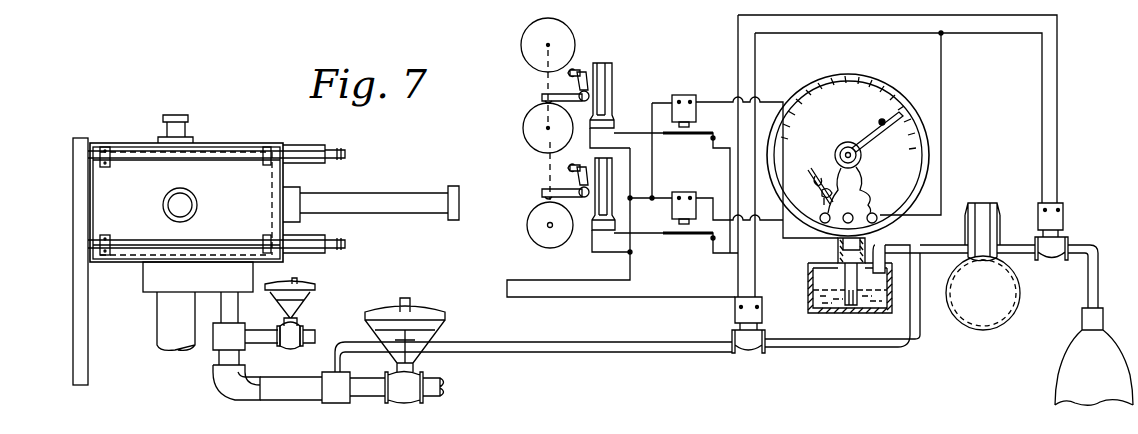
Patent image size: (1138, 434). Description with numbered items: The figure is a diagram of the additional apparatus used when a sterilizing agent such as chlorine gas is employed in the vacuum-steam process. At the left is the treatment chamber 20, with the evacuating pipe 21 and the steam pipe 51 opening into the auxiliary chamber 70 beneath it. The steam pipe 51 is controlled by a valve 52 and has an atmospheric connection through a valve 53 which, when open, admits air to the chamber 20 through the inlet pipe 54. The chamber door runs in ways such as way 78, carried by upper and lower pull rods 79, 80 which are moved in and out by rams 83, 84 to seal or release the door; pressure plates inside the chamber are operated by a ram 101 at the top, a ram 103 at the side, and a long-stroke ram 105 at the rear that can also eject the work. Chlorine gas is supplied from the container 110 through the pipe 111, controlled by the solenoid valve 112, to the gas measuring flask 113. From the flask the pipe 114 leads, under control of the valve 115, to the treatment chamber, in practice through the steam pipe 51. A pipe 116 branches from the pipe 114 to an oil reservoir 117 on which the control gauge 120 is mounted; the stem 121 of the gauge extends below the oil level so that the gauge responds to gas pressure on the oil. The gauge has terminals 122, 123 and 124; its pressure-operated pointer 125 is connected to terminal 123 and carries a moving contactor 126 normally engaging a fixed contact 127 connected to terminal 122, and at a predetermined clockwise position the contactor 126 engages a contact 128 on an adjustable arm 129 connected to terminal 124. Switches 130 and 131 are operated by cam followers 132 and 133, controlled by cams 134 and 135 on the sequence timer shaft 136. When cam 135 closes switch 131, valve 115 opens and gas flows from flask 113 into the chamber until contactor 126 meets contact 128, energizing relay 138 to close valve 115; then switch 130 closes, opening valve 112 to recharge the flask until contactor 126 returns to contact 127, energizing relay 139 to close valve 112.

The treatment chamber 20 is at (101, 201).
The evacuating pipe 21 is at (165, 327).
The steam pipe 51 is at (238, 312).
The valve 52 is at (408, 393).
The valve 53 is at (292, 330).
The inlet pipe 54 is at (318, 336).
The auxiliary chamber 70 is at (150, 282).
The way 78 is at (73, 255).
The upper pull rods 79 is at (248, 158).
The lower pull rods 80 is at (230, 244).
The ram 83 is at (312, 163).
The ram 84 is at (298, 238).
The ram 101 is at (180, 137).
The ram 103 is at (190, 206).
The ram 105 is at (397, 190).
The container 110 is at (1098, 358).
The pipe 111 is at (1083, 255).
The solenoid valve 112 is at (1057, 247).
The gas measuring flask 113 is at (1020, 290).
The pipe 114 is at (923, 251).
The valve 115 is at (752, 346).
The pipe 116 is at (880, 262).
The oil reservoir 117 is at (812, 302).
The control gauge 120 is at (928, 190).
The stem 121 is at (845, 275).
The terminal 122 is at (821, 223).
The terminal 123 is at (830, 228).
The terminal 124 is at (878, 218).
The pointer 125 is at (838, 173).
The moving contactor 126 is at (818, 183).
The fixed contact 127 is at (815, 203).
The contact 128 is at (881, 120).
The adjustable arm 129 is at (905, 125).
The switch 130 is at (624, 171).
The switch 131 is at (618, 85).
The cam follower 132 is at (545, 190).
The cam follower 133 is at (540, 96).
The cam 134 is at (535, 222).
The cam 135 is at (535, 127).
The sequence timer shaft 136 is at (545, 70).
The relay 138 is at (682, 96).
The relay 139 is at (684, 195).